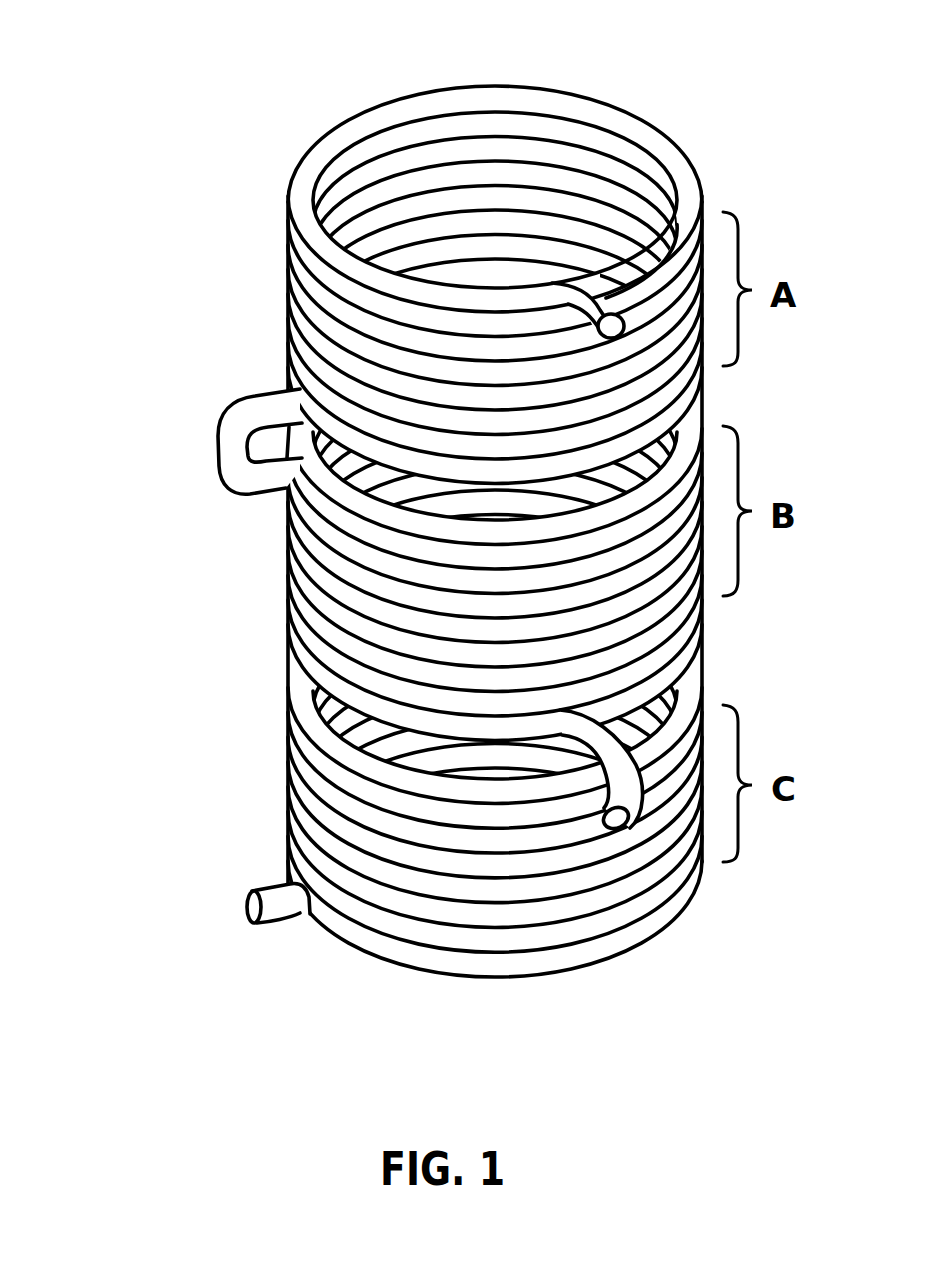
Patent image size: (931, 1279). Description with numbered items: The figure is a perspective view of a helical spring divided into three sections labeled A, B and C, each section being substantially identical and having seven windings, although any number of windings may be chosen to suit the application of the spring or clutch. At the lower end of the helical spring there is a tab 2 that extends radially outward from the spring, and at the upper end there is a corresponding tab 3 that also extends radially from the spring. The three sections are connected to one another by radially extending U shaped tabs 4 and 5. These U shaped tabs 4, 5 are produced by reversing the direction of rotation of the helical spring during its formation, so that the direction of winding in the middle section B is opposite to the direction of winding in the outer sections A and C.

The tab 2 is at (275, 902).
The tab 3 is at (603, 307).
The U shaped tab 4 is at (627, 823).
The U shaped tab 5 is at (228, 455).